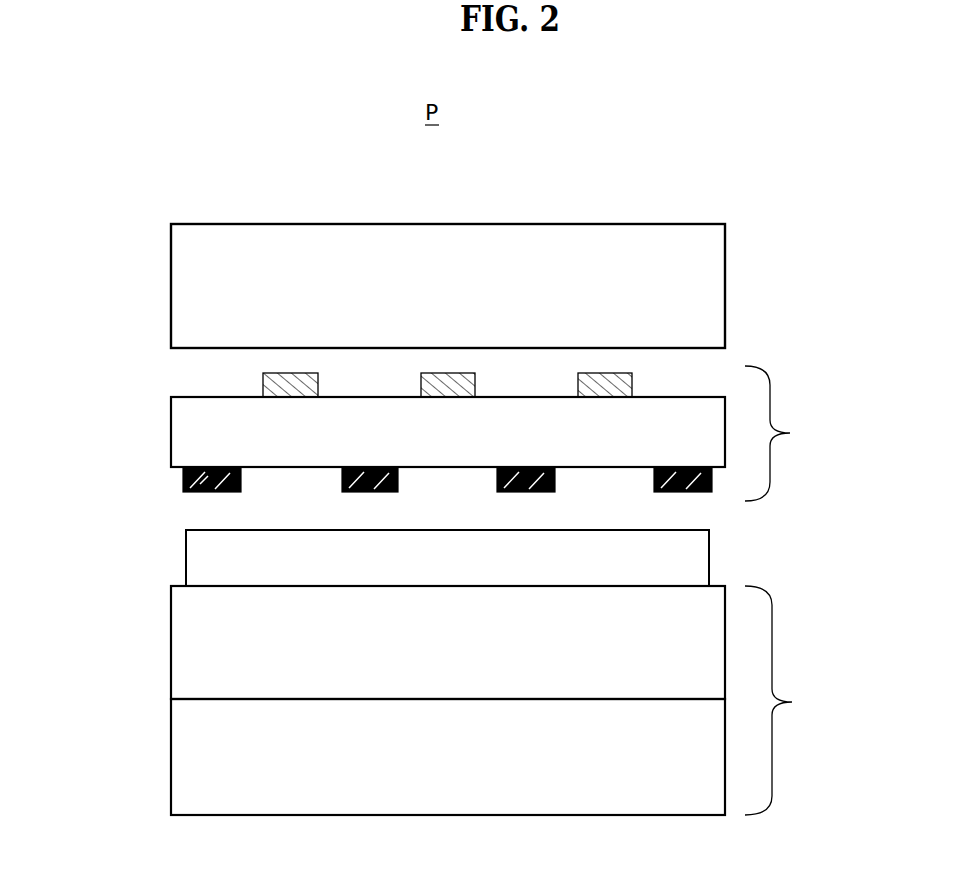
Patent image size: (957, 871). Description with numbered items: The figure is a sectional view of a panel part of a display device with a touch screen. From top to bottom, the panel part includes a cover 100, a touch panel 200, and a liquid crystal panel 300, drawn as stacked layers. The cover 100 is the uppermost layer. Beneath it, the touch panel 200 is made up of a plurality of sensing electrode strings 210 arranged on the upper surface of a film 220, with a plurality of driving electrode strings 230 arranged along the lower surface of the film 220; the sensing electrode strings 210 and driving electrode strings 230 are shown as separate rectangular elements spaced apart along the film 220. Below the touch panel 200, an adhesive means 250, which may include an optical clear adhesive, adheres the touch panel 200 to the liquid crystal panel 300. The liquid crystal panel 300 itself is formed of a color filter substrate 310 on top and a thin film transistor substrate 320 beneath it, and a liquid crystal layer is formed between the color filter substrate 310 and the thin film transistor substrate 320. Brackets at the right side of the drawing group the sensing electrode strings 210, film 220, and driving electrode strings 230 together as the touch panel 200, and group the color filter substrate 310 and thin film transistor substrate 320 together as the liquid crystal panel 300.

The cover 100 is at (192, 285).
The touch panel 200 is at (793, 433).
The sensing electrode strings 210 is at (263, 376).
The film 220 is at (192, 436).
The driving electrode strings 230 is at (183, 480).
The adhesive means 250 is at (214, 559).
The liquid crystal panel 300 is at (793, 700).
The color filter substrate 310 is at (192, 643).
The thin film transistor (TFT) substrate 320 is at (192, 762).